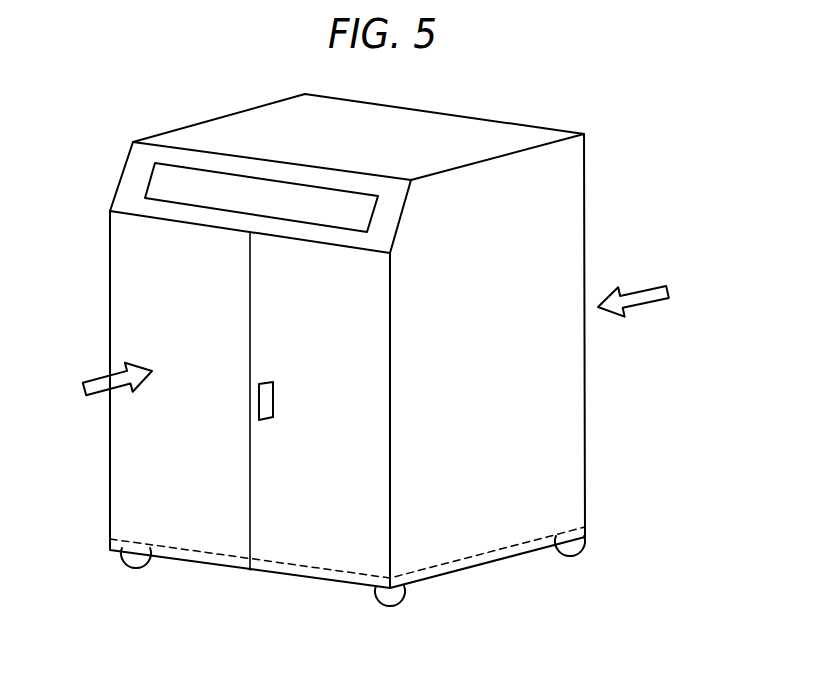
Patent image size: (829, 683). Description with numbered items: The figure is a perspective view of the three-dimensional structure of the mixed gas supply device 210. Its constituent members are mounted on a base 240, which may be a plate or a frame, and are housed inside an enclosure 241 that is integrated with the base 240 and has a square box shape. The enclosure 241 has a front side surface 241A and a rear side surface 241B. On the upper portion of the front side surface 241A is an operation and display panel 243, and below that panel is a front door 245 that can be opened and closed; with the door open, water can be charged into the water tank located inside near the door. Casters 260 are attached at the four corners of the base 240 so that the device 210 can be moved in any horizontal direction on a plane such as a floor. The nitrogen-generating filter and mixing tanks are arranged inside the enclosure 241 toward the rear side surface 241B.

The mixed gas supply device 210 is at (383, 373).
The base 240 is at (190, 548).
The enclosure 241 is at (570, 190).
The front side surface 241A is at (98, 377).
The rear side surface 241B is at (653, 282).
The operation and display panel 243 is at (163, 180).
The front door 245 is at (282, 537).
The casters 260 is at (135, 567).